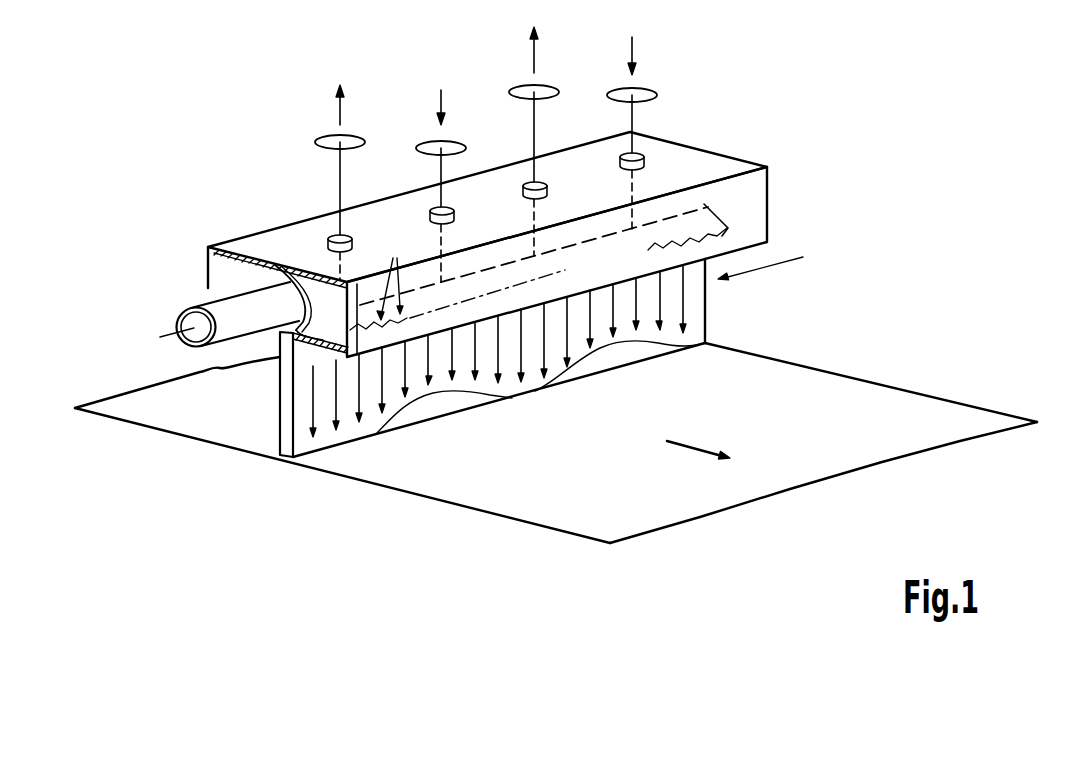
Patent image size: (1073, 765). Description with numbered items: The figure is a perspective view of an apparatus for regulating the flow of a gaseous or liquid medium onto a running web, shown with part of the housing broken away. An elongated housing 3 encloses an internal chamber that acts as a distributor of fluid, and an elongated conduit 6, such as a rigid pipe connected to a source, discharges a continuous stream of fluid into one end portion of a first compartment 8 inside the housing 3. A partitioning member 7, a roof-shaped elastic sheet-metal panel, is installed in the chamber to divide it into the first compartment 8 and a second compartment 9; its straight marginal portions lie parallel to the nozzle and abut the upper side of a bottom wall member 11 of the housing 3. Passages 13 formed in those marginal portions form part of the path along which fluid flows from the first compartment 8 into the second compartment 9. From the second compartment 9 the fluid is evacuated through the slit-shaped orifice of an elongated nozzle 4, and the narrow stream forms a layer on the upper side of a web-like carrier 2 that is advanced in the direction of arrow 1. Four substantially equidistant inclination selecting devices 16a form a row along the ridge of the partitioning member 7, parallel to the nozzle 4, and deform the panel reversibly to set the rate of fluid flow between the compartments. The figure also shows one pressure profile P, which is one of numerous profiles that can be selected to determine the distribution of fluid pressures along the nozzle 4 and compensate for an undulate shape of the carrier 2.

The arrow 1 is at (695, 443).
The web-like carrier 2 is at (865, 395).
The housing 3 is at (687, 160).
The nozzle 4 is at (632, 353).
The conduit 6 is at (227, 311).
The partitioning member 7 is at (565, 270).
The first compartment 8 is at (323, 297).
The second compartment 9 is at (292, 354).
The bottom wall member 11 is at (330, 350).
The passages 13 is at (378, 280).
The inclination selecting devices 16a is at (441, 170).
The pressure profile P is at (770, 259).